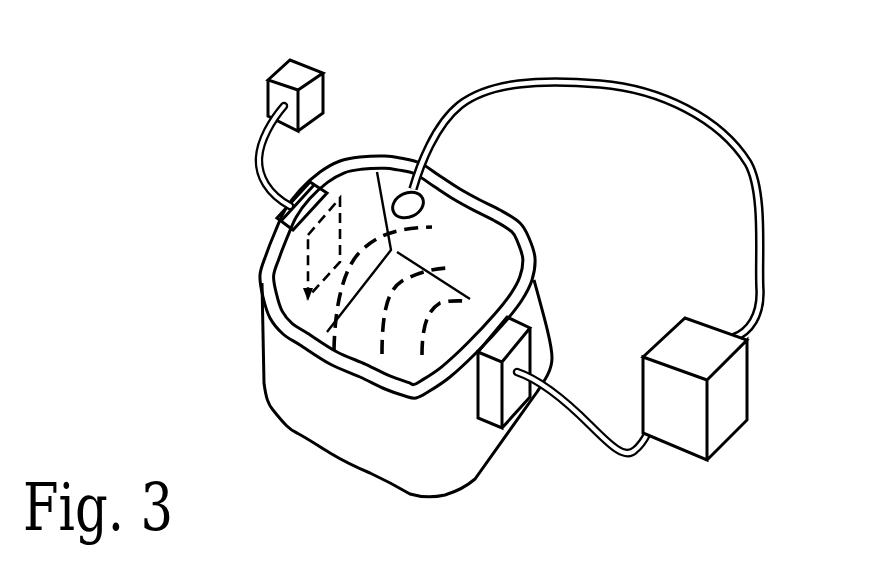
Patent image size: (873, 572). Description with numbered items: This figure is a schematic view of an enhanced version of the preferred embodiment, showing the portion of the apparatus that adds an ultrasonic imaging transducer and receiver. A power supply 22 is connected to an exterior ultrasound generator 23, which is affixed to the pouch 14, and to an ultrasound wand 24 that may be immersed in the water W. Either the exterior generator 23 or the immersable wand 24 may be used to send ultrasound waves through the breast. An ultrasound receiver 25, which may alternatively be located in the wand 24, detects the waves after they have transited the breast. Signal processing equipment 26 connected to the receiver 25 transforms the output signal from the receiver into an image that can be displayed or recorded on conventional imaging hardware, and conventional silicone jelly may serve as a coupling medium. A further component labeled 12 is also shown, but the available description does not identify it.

The tank rim / bath 12 is at (277, 299).
The pouch 14 is at (300, 393).
The water W is at (392, 360).
The power supply 22 is at (673, 447).
The exterior ultrasound generator 23 is at (537, 336).
The ultrasound wand 24 is at (540, 78).
The ultrasound receiver 25 is at (140, 130).
The signal processing equipment 26 is at (268, 58).